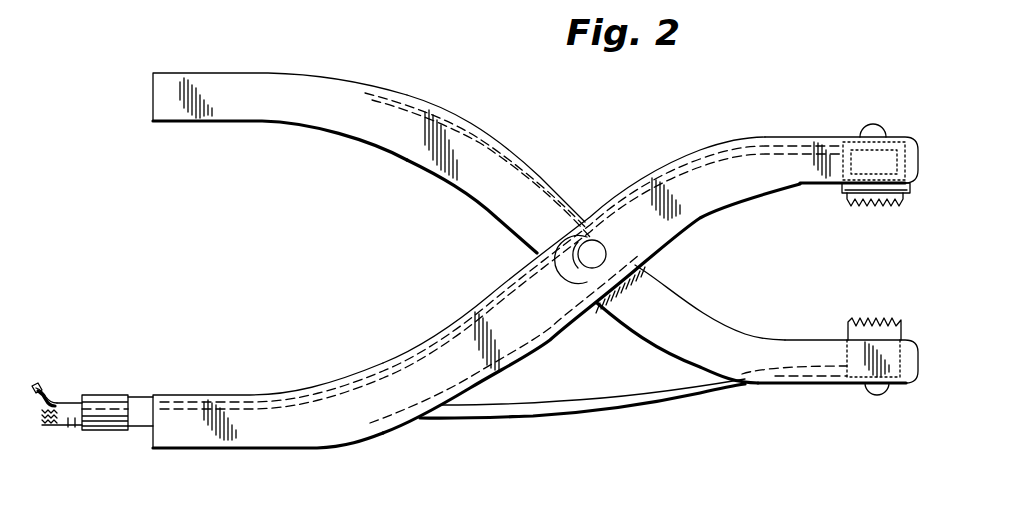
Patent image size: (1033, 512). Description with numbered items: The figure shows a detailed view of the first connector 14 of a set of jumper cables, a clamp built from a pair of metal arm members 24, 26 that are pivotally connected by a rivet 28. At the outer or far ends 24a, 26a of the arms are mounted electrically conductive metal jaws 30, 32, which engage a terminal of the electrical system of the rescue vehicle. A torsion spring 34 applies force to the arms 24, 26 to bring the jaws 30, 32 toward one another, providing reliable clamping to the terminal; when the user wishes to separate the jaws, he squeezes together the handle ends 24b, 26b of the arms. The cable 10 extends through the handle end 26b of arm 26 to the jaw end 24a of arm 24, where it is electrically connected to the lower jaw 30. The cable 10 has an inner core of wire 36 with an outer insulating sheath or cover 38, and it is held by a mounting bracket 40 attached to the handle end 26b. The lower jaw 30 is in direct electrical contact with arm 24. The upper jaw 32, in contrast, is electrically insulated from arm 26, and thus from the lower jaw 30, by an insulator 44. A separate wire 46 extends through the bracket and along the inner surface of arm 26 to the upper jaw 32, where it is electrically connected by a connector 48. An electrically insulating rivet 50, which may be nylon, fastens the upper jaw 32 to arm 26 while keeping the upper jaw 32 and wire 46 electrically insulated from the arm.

The cable 10 is at (67, 434).
The first connector 14 is at (758, 133).
The arm member 24 is at (414, 150).
The jaw end of arm 24 24a is at (807, 385).
The handle end of arm 24 24b is at (240, 125).
The arm member 26 is at (301, 410).
The jaw end of arm 26 26a is at (800, 134).
The handle end of arm 26 26b is at (183, 393).
The rivet 28 is at (593, 254).
The lower jaw 30 is at (848, 327).
The upper jaw 32 is at (884, 204).
The torsion spring 34 is at (493, 142).
The wire 36 is at (75, 422).
The insulating sheath 38 is at (43, 423).
The mounting bracket 40 is at (110, 402).
The insulator 44 is at (908, 187).
The wire 46 is at (705, 162).
The connector 48 is at (811, 152).
The electrically insulating rivet 50 is at (880, 125).